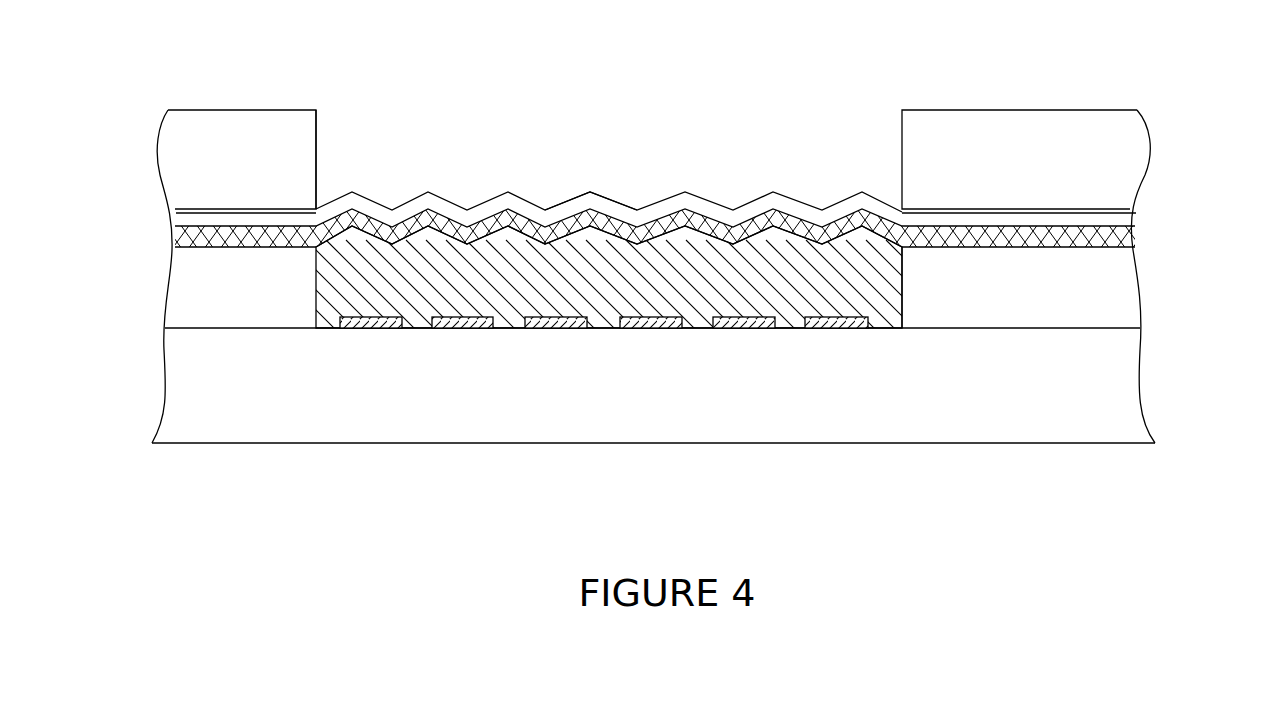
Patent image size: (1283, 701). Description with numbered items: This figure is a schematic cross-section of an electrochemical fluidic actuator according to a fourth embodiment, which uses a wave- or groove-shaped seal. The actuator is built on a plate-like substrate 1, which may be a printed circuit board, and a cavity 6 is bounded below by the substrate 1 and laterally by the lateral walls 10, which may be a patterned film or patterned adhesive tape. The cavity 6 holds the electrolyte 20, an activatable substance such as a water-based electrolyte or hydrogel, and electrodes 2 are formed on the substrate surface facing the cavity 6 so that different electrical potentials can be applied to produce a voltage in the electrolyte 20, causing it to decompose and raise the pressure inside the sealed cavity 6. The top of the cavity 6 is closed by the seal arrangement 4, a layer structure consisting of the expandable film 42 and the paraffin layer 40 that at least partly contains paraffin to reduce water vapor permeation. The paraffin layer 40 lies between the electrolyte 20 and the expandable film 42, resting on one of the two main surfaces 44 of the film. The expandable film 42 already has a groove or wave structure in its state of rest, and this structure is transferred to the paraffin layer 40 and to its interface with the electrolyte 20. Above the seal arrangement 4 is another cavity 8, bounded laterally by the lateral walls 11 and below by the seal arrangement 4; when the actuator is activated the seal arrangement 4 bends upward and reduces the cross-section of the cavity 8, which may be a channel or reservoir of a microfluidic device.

The substrate 1 is at (261, 395).
The electrodes 2 is at (367, 330).
The seal arrangement 4 is at (860, 85).
The cavity 6 is at (897, 283).
The other cavity 8 is at (331, 140).
The lateral walls 10 is at (215, 285).
The lateral walls 11 is at (215, 158).
The electrolyte 20 is at (508, 278).
The paraffin layer 40 is at (845, 218).
The expandable film 42 is at (773, 205).
The main surface 44 is at (565, 232).